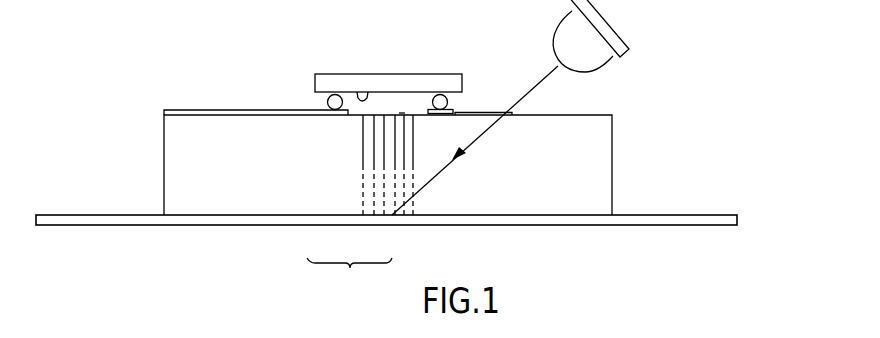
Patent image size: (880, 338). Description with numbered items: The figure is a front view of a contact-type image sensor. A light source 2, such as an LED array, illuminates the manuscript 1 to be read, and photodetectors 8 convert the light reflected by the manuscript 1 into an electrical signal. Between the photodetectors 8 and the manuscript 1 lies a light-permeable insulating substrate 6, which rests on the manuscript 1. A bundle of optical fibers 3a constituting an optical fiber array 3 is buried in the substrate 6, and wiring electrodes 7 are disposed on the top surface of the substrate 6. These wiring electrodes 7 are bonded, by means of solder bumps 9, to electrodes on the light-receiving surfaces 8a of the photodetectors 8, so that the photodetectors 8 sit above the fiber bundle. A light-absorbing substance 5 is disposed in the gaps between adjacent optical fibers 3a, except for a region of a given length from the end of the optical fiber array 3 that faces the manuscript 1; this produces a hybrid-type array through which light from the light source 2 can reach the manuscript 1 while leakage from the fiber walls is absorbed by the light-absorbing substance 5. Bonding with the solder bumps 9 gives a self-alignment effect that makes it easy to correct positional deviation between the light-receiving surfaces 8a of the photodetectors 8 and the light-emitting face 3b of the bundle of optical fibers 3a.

The manuscript 1 is at (682, 216).
The light source 2 is at (615, 33).
The optical fiber array 3 is at (349, 276).
The optical fibers 3a is at (370, 150).
The light-emitting face 3b is at (400, 116).
The light-absorbing substance 5 is at (362, 134).
The light-permeable insulating substrate 6 is at (602, 145).
The wiring electrodes 7 is at (198, 108).
The photodetectors 8 is at (385, 73).
The light-receiving surfaces 8a is at (358, 96).
The solder bumps 9 is at (327, 101).